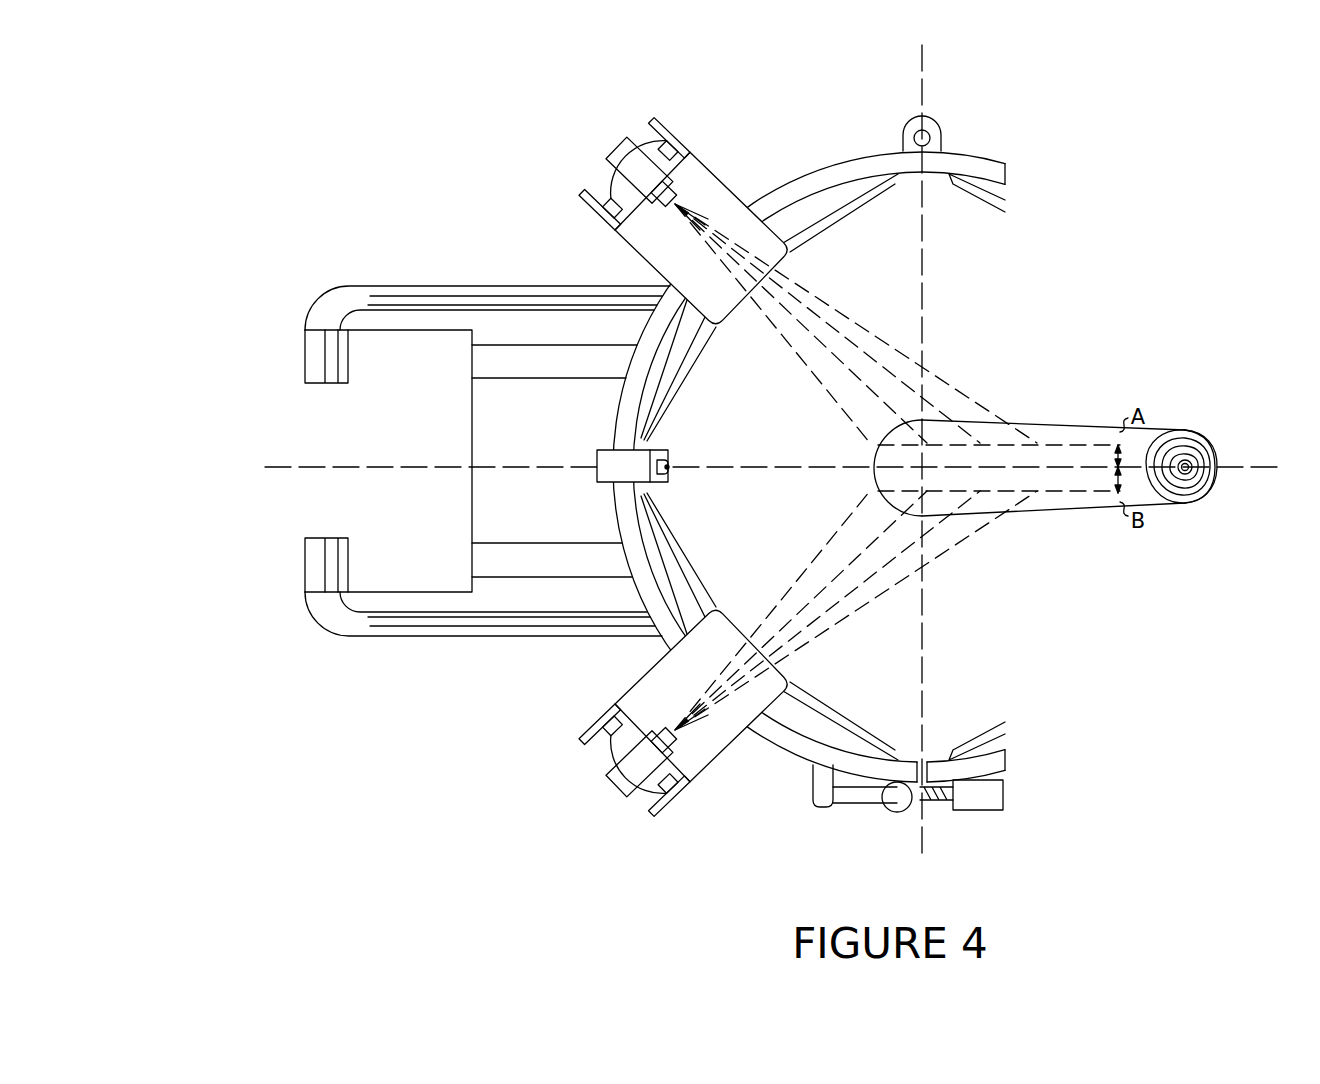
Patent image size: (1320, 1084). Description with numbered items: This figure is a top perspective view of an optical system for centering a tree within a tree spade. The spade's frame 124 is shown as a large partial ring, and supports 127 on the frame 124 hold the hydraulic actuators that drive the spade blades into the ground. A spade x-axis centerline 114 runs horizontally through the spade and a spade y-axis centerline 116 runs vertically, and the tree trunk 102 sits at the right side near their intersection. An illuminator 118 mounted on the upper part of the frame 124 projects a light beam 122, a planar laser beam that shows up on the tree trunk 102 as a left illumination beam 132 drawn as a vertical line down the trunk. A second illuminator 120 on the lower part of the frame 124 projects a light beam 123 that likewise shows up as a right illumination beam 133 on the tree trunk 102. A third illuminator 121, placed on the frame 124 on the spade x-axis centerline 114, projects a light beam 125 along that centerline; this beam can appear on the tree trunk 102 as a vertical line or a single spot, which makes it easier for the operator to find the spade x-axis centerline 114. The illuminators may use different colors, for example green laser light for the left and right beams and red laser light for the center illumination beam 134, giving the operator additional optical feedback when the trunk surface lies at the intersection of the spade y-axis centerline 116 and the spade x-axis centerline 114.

The tree trunk 102 is at (1093, 428).
The spade x-axis centerline 114 is at (266, 463).
The spade y-axis centerline 116 is at (923, 95).
The illuminator 118 is at (628, 143).
The illuminator 120 is at (614, 774).
The third illuminator 121 is at (597, 473).
The light beam 122 is at (697, 207).
The light beam 123 is at (690, 728).
The frame 124 is at (837, 168).
The light beam 125 is at (722, 468).
The support 127 is at (598, 232).
The left illumination beam 132 is at (993, 443).
The right illumination beam 133 is at (995, 500).
The center illumination beam 134 is at (1067, 470).